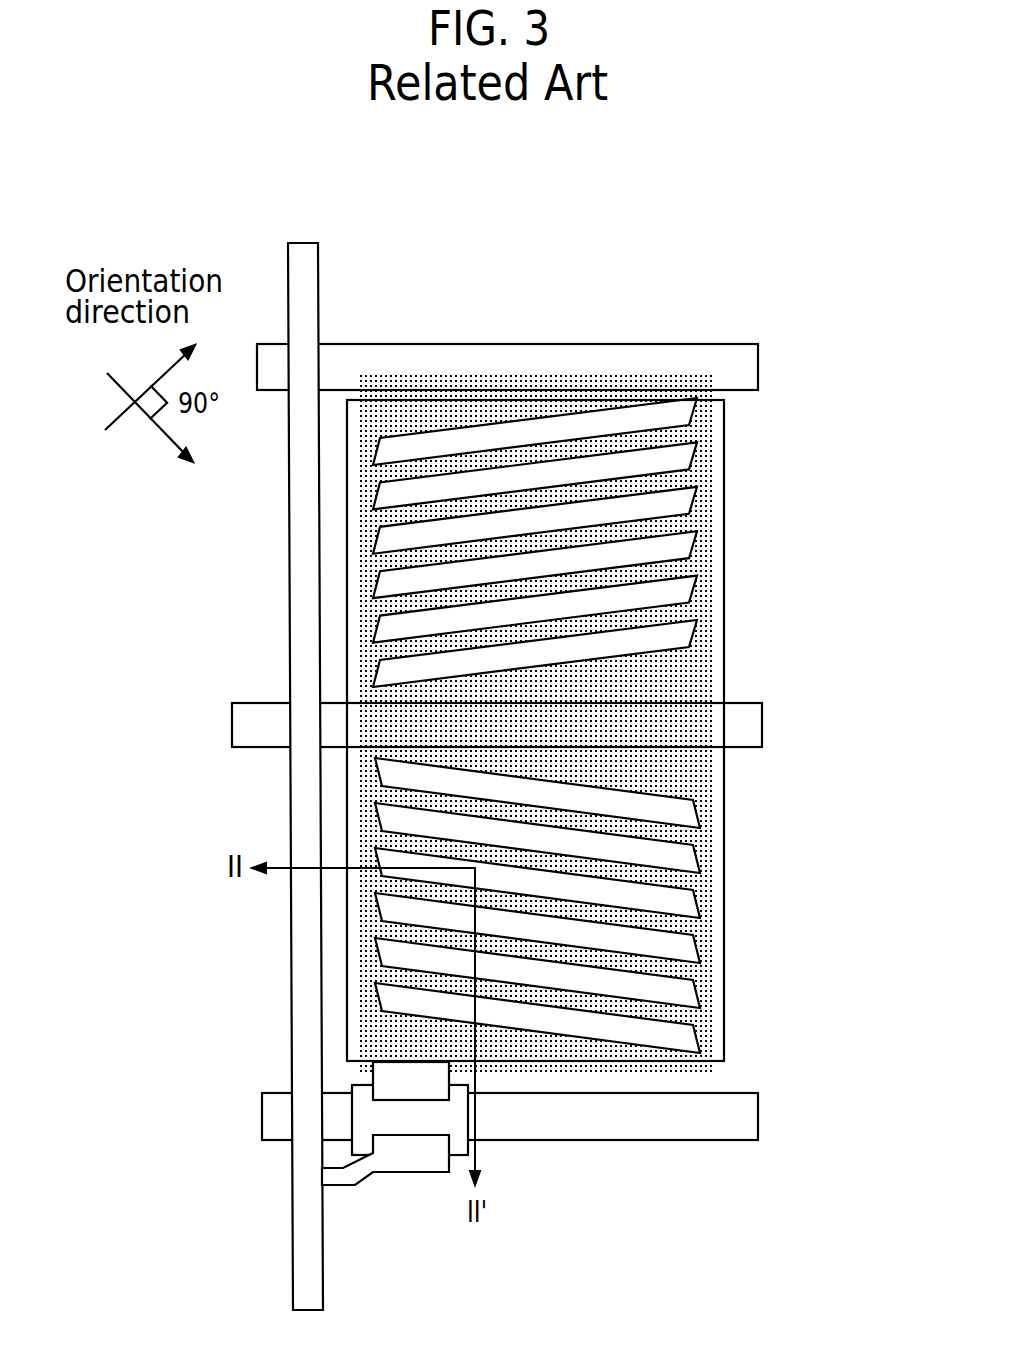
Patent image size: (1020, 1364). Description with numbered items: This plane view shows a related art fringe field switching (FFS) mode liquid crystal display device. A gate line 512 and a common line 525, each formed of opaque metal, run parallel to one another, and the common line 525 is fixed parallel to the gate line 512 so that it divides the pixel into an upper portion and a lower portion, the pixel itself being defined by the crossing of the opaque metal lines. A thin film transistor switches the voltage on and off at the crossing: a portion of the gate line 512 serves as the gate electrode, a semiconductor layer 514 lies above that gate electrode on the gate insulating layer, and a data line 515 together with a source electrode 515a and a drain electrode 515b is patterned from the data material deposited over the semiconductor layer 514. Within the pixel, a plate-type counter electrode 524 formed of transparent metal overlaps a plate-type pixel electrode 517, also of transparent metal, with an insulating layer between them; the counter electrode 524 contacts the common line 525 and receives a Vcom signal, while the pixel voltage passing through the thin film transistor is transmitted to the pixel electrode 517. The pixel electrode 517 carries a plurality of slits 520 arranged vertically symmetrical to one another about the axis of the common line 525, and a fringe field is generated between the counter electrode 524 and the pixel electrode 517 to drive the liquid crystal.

The gate line 512 is at (658, 1128).
The semiconductor layer 514 is at (422, 1125).
The data line 515 is at (303, 932).
The source electrode 515a is at (388, 1152).
The drain electrode 515b is at (393, 1072).
The pixel electrode 517 is at (705, 833).
The slits 520 is at (683, 902).
The counter electrode 524 is at (722, 977).
The common line 525 is at (752, 728).